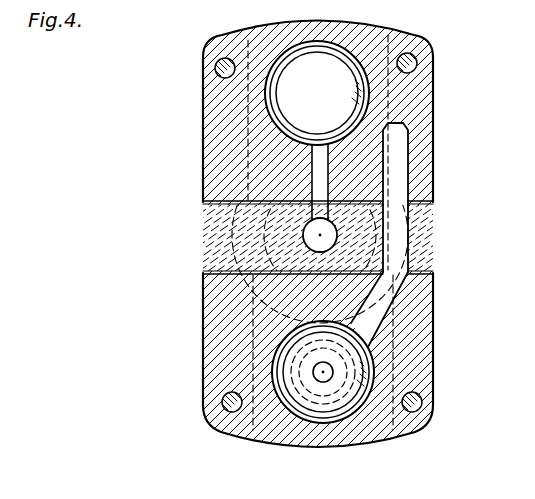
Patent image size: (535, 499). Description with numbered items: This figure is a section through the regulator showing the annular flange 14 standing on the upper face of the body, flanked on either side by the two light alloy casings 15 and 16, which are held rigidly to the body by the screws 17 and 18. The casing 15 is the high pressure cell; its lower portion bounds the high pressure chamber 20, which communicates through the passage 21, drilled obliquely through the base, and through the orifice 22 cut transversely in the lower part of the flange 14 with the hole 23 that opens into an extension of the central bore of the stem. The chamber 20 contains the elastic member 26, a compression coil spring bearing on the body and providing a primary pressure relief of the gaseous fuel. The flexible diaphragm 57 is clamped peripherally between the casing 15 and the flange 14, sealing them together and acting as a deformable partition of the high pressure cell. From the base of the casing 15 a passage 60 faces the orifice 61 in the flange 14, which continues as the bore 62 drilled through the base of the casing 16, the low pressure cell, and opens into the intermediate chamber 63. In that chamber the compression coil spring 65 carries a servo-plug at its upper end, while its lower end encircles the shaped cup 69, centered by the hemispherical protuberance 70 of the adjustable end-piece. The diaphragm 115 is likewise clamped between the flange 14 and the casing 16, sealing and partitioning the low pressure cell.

The annular flange 14 is at (216, 264).
The casing 15 is at (418, 92).
The casing 16 is at (418, 328).
The screws 17 is at (216, 70).
The screws 18 is at (222, 401).
The high pressure chamber 20 is at (351, 117).
The passage 21 is at (270, 168).
The orifice 22 is at (265, 217).
The hole 23 is at (302, 238).
The elastic member 26 is at (348, 64).
The flexible diaphragm 57 is at (372, 197).
The passage 60 is at (398, 153).
The orifice 61 is at (400, 233).
The bore 62 is at (390, 292).
The intermediate chamber 63 is at (360, 412).
The compression coil spring 65 is at (282, 360).
The shaped cup 69 is at (295, 393).
The hemispherical protuberance 70 is at (340, 373).
The diaphragm 115 is at (380, 263).